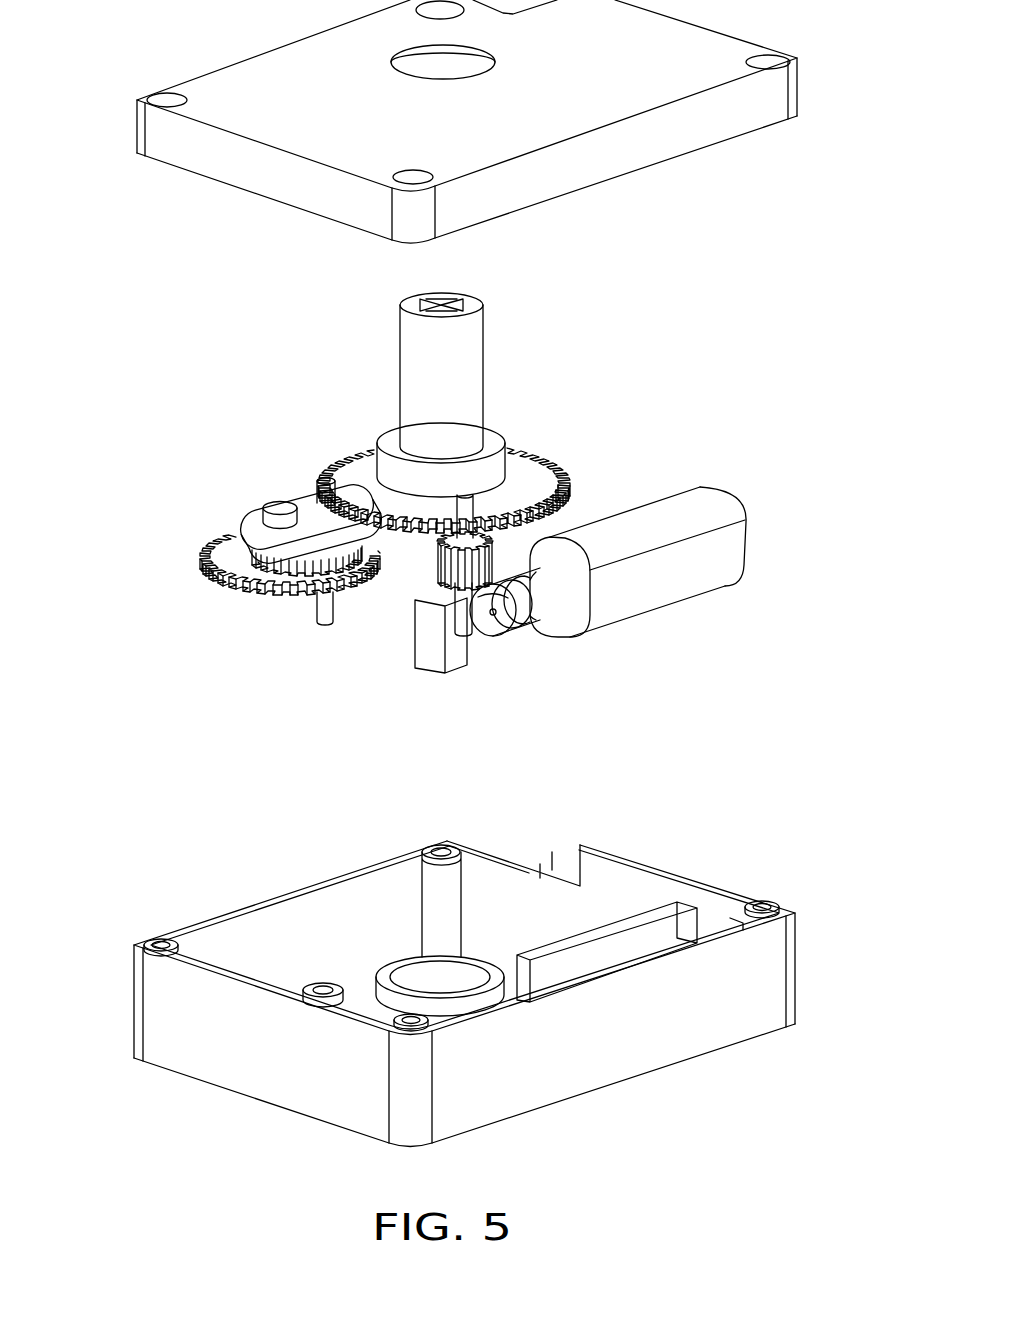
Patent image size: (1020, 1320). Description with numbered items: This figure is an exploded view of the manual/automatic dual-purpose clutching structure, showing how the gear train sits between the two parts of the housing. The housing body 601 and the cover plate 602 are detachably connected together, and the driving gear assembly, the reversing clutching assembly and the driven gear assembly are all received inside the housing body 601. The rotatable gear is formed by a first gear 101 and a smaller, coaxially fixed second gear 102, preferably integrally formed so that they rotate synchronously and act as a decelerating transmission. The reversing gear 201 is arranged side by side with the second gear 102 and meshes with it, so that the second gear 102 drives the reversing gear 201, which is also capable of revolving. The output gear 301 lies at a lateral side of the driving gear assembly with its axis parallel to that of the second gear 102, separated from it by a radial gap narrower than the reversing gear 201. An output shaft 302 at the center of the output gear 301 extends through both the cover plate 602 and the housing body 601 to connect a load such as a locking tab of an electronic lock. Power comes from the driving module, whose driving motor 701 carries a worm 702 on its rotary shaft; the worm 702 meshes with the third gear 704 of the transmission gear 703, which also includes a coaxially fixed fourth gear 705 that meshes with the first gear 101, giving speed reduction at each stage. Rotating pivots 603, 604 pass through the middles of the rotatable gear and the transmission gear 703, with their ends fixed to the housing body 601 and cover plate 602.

The first gear 101 is at (228, 537).
The second gear 102 is at (333, 548).
The reversing gear 201 is at (253, 548).
The output gear 301 is at (518, 475).
The output shaft 302 is at (410, 408).
The housing body 601 is at (253, 938).
The cover plate 602 is at (680, 120).
The rotating pivot 603 is at (320, 603).
The rotating pivot 604 is at (470, 634).
The driving motor 701 is at (665, 573).
The worm 702 is at (547, 623).
The transmission gear 703 is at (419, 631).
The third gear 704 is at (447, 593).
The worm wheel pinion 705 is at (449, 557).